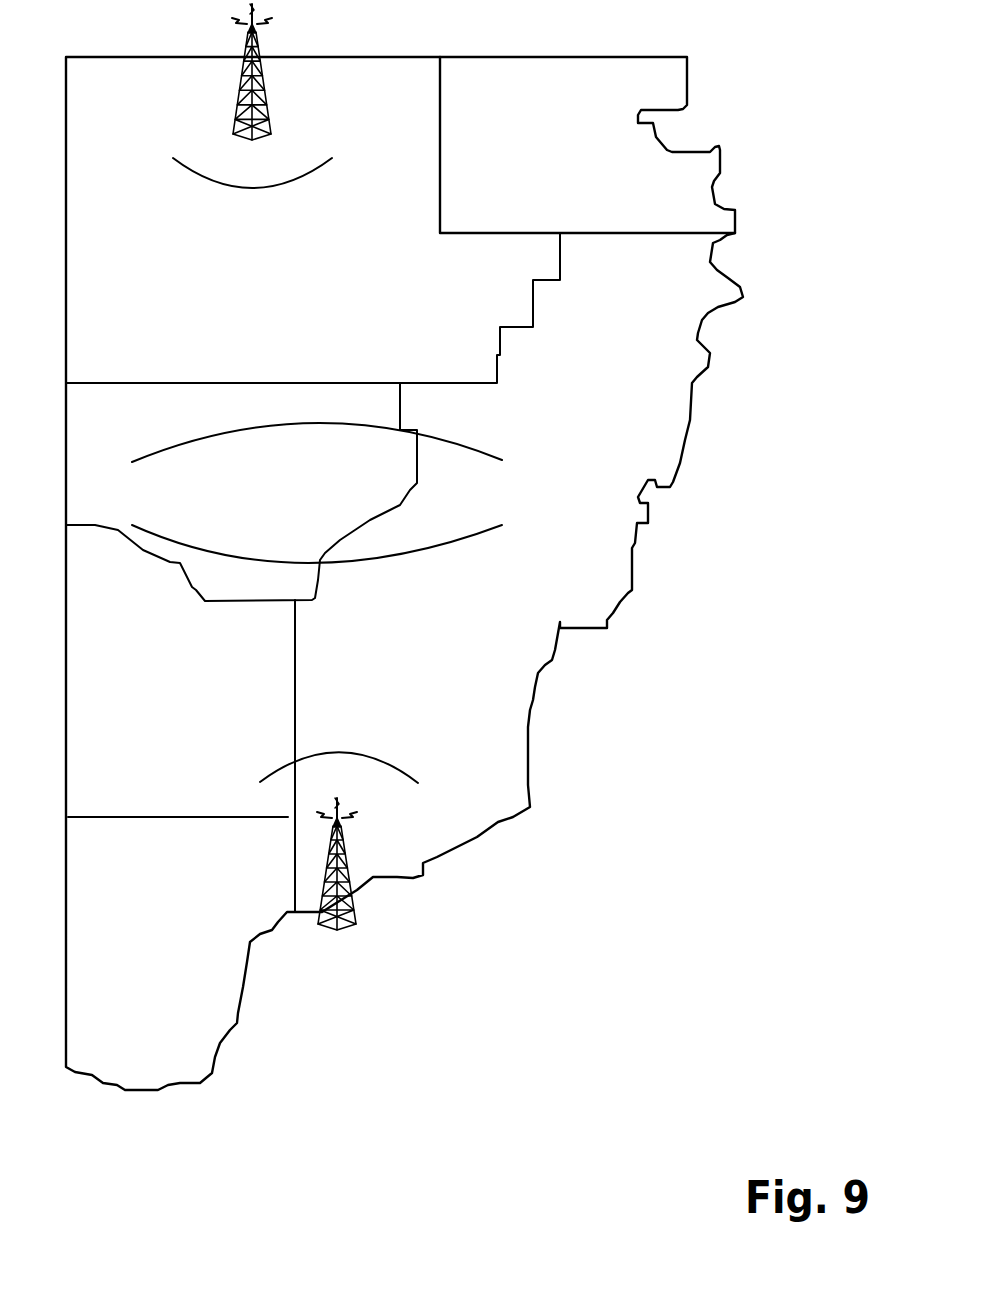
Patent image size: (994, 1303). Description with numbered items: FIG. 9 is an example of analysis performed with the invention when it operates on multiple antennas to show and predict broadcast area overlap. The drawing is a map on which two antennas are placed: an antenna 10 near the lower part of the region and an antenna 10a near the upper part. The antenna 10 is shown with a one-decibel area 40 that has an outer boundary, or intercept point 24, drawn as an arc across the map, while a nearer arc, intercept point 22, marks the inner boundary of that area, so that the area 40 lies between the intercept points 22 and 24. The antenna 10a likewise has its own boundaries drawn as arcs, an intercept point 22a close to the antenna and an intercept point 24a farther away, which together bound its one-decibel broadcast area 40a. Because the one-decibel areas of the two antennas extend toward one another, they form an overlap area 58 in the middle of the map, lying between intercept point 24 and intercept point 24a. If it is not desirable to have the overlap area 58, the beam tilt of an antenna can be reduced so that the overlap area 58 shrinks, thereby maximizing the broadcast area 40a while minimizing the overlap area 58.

The antenna 10 is at (347, 852).
The antenna 10a is at (257, 87).
The intercept point 22 is at (400, 763).
The intercept point 22a is at (302, 178).
The intercept point 24 is at (497, 451).
The intercept point 24a is at (453, 547).
The area 40 is at (180, 650).
The broadcast area 40a is at (158, 321).
The overlap area 58 is at (151, 498).